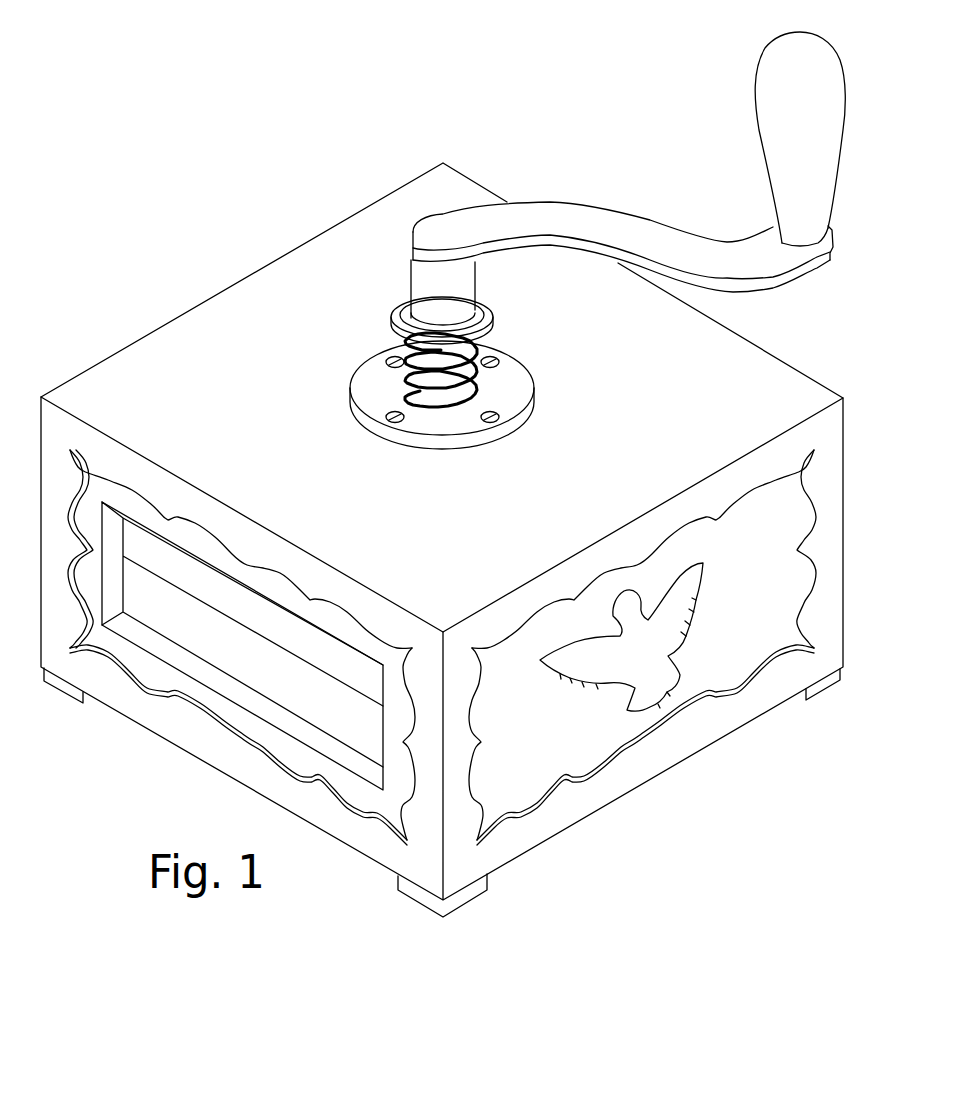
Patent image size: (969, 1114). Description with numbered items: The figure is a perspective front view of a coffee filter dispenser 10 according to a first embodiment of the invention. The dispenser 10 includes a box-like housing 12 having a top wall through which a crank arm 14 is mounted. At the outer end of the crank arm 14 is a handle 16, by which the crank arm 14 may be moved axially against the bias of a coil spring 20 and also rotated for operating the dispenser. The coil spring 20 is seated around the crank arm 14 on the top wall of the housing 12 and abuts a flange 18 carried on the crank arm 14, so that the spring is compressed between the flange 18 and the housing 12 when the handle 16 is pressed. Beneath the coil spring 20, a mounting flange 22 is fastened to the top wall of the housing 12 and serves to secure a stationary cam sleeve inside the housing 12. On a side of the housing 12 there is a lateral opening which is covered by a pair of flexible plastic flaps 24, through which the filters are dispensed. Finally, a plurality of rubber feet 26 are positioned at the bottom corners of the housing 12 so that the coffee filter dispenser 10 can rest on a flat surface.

The coffee filter dispenser 10 is at (252, 127).
The housing 12 is at (462, 543).
The crank arm 14 is at (573, 216).
The handle 16 is at (774, 75).
The flange 18 is at (398, 324).
The coil spring 20 is at (484, 344).
The mounting flange 22 is at (516, 397).
The flexible plastic flaps 24 is at (245, 657).
The rubber feet 26 is at (65, 691).